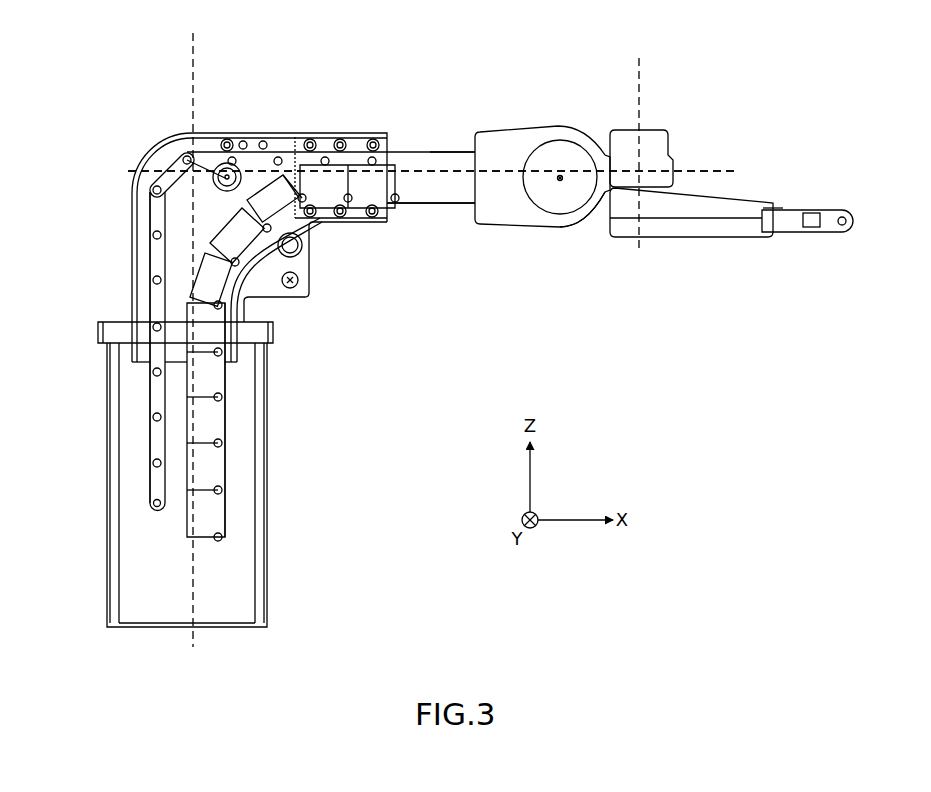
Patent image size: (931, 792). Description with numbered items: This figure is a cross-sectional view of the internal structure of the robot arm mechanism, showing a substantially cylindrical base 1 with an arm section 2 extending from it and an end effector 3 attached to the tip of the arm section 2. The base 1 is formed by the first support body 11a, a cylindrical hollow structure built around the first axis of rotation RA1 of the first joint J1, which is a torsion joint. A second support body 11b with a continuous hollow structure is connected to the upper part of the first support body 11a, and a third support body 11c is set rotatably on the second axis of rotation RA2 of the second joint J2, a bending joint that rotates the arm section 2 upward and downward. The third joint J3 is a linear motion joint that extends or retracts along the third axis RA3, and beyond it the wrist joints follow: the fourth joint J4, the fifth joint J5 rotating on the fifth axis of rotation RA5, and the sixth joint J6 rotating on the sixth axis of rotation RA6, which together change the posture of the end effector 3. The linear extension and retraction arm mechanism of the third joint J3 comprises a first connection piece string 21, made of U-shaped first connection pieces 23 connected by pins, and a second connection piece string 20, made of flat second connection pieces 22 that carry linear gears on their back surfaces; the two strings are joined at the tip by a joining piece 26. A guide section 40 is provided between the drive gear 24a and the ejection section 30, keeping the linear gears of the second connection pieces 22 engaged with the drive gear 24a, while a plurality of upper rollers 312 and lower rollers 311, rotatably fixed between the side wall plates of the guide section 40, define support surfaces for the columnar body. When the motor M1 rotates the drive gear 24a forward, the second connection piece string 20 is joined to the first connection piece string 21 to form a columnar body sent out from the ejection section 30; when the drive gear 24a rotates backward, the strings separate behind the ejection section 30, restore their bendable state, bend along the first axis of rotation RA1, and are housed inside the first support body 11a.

The base 1 is at (100, 546).
The first support body 11a is at (267, 592).
The second support body 11b is at (132, 230).
The third support body 11c is at (207, 133).
The arm section 2 is at (398, 150).
The end effector 3 is at (695, 251).
The second connection piece string 20 is at (141, 470).
The first connection piece string 21 is at (231, 471).
The second connection piece 22 is at (150, 432).
The first connection piece 23 is at (226, 423).
The drive gear 24a is at (186, 167).
The joining piece 26 is at (466, 151).
The ejection section 30 is at (288, 157).
The lower rollers 311 is at (386, 222).
The upper rollers 312 is at (344, 133).
The guide section 40 is at (243, 139).
The first joint J1 is at (110, 320).
The second joint J2 is at (290, 289).
The third joint J3 is at (434, 211).
The fourth joint J4 is at (542, 130).
The fifth joint J5 is at (578, 213).
The sixth joint J6 is at (676, 133).
The motor M1 is at (315, 247).
The first axis of rotation RA1 is at (193, 331).
The second axis of rotation RA2 is at (299, 283).
The third axis RA3 is at (472, 171).
The fifth axis of rotation RA5 is at (560, 181).
The sixth axis of rotation RA6 is at (638, 138).